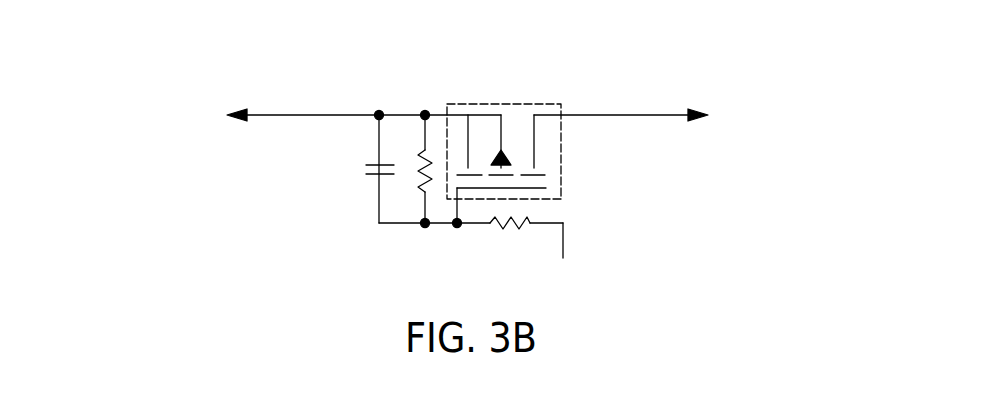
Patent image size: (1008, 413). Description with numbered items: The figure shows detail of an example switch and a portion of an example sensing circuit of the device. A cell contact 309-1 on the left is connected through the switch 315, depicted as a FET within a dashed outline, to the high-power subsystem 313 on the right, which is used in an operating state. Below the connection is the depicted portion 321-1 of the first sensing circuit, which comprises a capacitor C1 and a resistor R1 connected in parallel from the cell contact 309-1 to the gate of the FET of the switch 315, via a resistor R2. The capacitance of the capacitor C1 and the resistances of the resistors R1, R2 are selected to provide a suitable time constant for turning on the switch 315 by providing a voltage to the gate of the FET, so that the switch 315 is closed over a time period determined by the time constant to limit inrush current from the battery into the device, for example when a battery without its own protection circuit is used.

The cell contact 309-1 is at (120, 114).
The high-power subsystem 313 is at (802, 140).
The switch 315 is at (561, 150).
The portion of the first sensing circuit 321-1 is at (451, 190).
The resistor R1 is at (418, 160).
The capacitor C1 is at (364, 170).
The resistor R2 is at (510, 239).